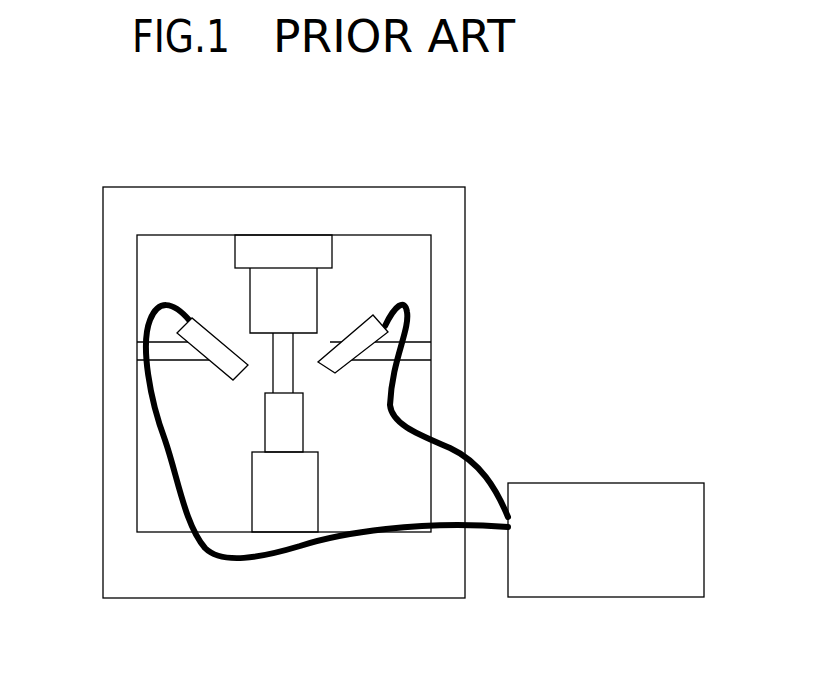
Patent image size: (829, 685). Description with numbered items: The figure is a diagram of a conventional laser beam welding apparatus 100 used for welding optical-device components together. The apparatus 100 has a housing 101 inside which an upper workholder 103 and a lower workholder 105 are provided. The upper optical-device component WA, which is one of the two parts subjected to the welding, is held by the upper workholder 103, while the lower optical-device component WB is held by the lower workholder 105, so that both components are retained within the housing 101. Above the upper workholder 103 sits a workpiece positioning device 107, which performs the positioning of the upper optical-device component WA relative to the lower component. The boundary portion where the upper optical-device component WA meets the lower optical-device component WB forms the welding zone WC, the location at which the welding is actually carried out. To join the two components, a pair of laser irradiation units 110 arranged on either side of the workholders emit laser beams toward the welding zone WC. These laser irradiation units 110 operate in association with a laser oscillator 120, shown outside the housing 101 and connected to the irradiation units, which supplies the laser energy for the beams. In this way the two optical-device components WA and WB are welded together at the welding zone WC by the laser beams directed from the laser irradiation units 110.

The laser beam welding apparatus 100 is at (218, 123).
The housing 101 is at (387, 188).
The upper workholder 103 is at (317, 283).
The lower workholder 105 is at (252, 475).
The workpiece positioning device 107 is at (303, 252).
The laser irradiation units 110 is at (343, 333).
The laser oscillator 120 is at (572, 482).
The upper optical-device component WA is at (400, 353).
The lower optical-device component WB is at (283, 430).
The welding zone WC is at (262, 385).